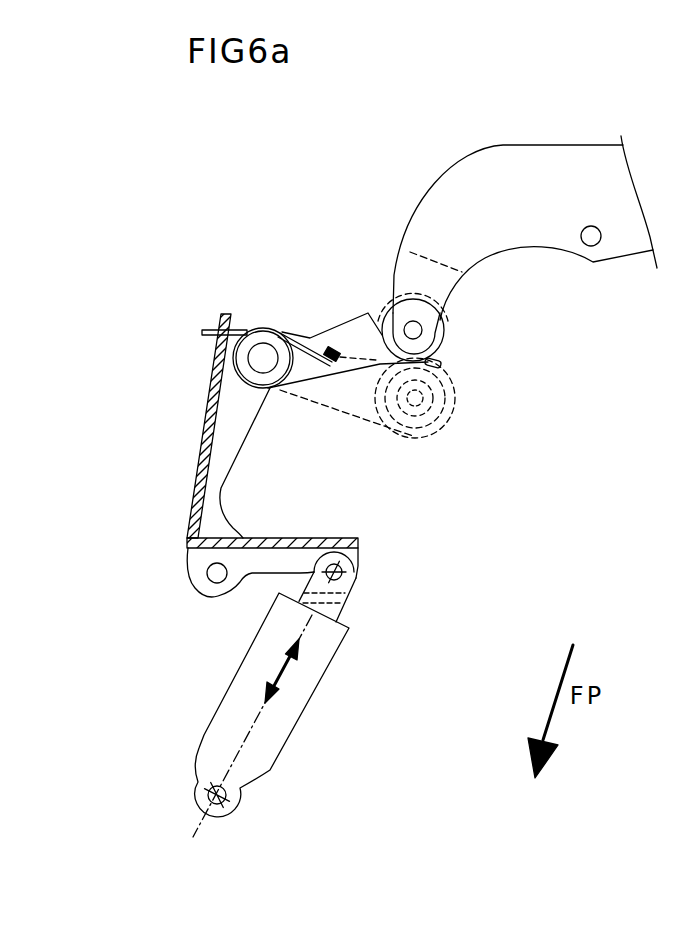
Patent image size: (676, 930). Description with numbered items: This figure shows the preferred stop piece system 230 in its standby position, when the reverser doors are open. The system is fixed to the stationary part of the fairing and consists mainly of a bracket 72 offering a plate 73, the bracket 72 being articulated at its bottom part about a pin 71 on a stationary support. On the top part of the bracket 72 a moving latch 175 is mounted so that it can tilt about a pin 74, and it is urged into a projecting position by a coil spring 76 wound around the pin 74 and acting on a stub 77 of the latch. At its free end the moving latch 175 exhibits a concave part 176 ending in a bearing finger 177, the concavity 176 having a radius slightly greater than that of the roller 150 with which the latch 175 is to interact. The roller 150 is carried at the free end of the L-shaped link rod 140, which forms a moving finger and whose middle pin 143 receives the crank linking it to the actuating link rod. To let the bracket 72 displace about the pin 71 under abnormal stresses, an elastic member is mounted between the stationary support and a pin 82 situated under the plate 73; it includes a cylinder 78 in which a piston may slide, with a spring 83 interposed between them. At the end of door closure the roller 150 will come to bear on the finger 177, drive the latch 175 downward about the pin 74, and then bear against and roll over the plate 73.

The third element 140 is at (465, 185).
The middle pin 143 is at (590, 243).
The roller 150 is at (445, 338).
The bearing finger 177 is at (441, 366).
The concave part 176 is at (340, 356).
The moving latch 175 is at (340, 363).
The stub 77 is at (332, 333).
The coil spring 76 is at (268, 333).
The pin 74 is at (258, 338).
The stop piece system 230 is at (223, 302).
The bracket 72 is at (203, 413).
The plate 73 is at (338, 536).
The pin 71 is at (200, 585).
The pin 82 is at (354, 572).
The cylinder 78 is at (340, 650).
The spring 83 is at (283, 678).